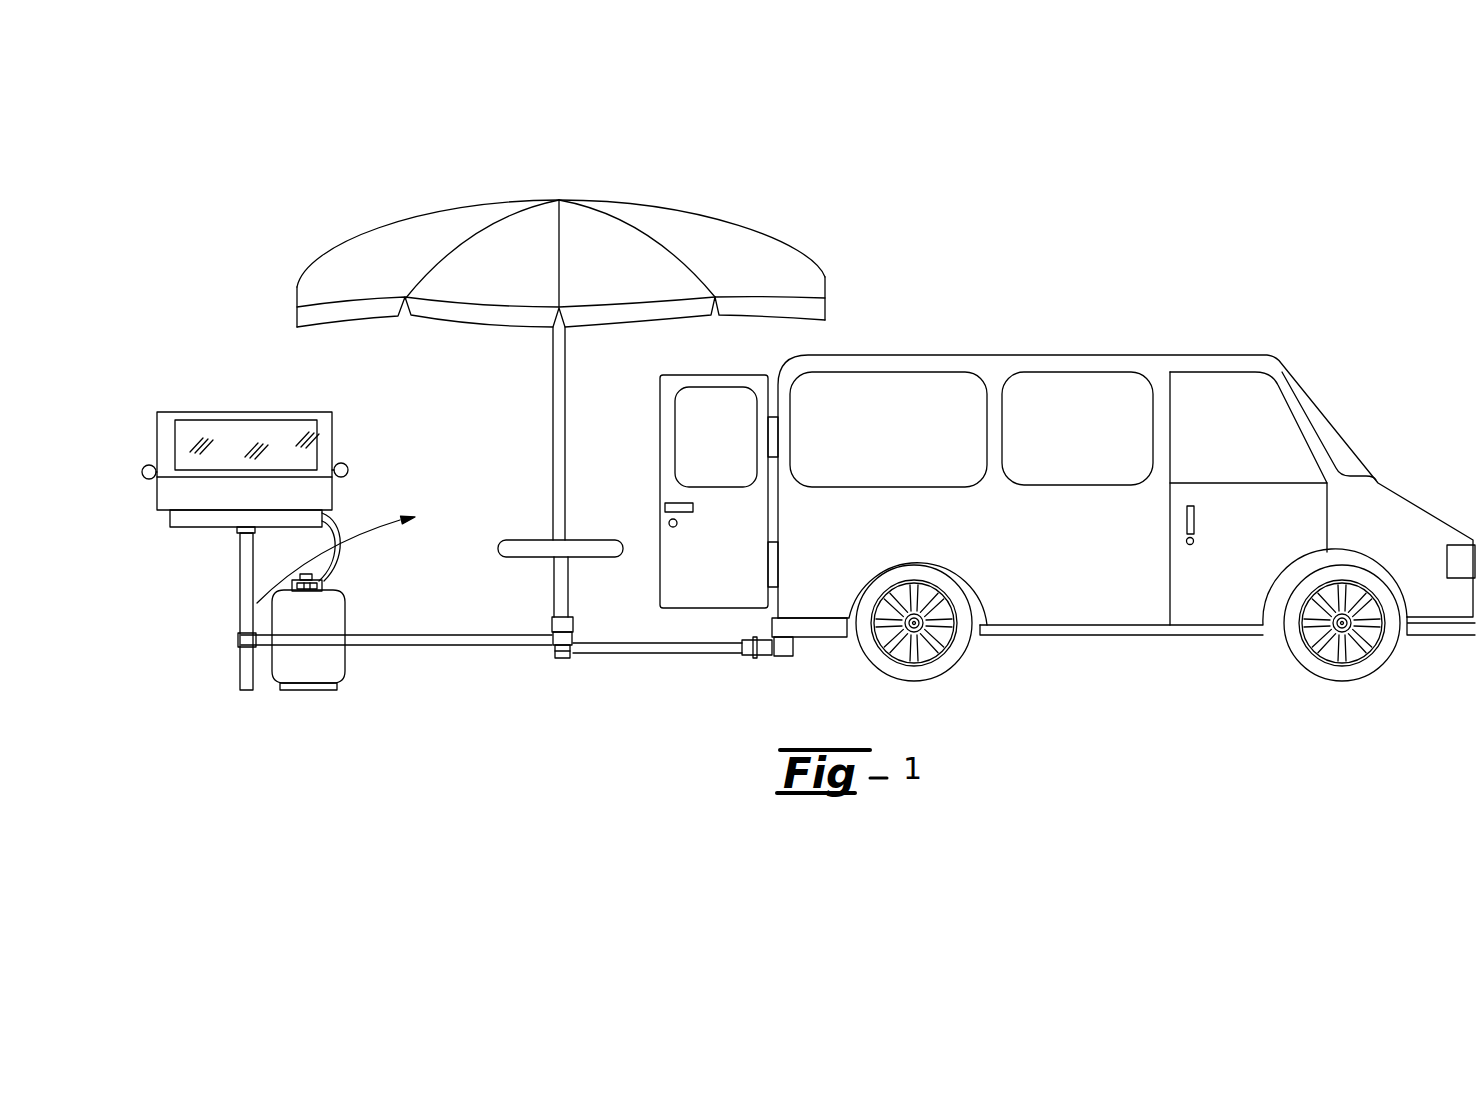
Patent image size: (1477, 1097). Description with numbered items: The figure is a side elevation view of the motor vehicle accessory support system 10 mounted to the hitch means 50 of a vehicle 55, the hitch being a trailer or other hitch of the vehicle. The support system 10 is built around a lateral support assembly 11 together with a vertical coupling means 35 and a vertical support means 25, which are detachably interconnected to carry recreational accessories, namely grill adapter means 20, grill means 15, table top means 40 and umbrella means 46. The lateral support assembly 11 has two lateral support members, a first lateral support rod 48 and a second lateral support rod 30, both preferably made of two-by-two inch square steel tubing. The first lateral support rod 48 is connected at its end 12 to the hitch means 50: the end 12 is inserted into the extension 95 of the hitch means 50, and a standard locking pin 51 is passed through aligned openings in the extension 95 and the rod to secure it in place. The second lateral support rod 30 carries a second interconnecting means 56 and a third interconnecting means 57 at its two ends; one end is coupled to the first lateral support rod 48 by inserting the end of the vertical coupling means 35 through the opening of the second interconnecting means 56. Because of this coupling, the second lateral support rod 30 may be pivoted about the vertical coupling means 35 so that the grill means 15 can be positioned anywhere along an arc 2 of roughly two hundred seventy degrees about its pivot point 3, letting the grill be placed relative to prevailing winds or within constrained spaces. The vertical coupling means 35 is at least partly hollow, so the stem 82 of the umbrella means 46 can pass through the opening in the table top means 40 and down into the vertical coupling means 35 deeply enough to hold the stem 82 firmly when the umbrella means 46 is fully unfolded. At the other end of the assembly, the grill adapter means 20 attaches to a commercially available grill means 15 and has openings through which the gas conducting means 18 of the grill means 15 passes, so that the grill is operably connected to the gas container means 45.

The motor vehicle accessory support system 10 is at (300, 198).
The umbrella means 46 is at (753, 227).
The stem 82 is at (564, 358).
The table top means 40 is at (530, 540).
The vertical coupling means 35 is at (568, 590).
The second interconnecting means 56 is at (552, 630).
The pivot point 3 is at (568, 657).
The second lateral support rod 30 is at (452, 635).
The first lateral support rod 48 is at (668, 653).
The locking pin 51 is at (750, 657).
The extension 95 is at (766, 659).
The hitch means 50 is at (790, 657).
The grill means 15 is at (167, 423).
The grill adapter means 20 is at (200, 520).
The vertical support means 25 is at (240, 568).
The third interconnecting means 57 is at (238, 641).
The gas container means 45 is at (345, 653).
The gas conducting means 18 is at (322, 523).
The lateral support assembly 11 is at (521, 665).
The end 12 is at (726, 675).
The arc 2 is at (247, 697).
The vehicle 55 is at (985, 355).